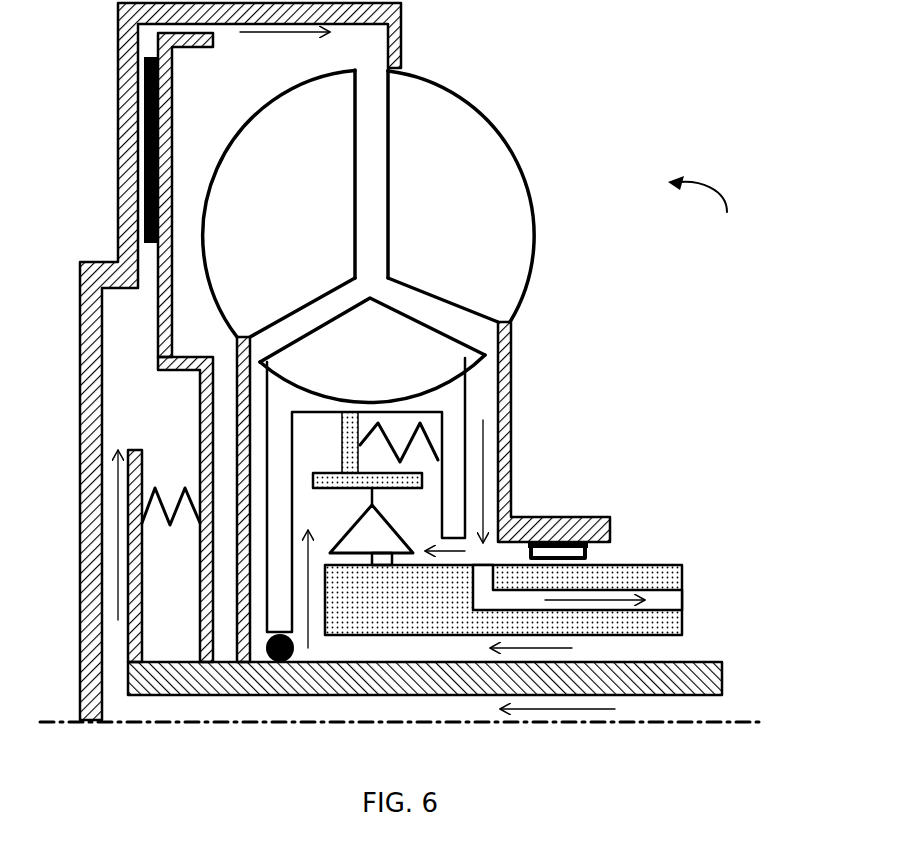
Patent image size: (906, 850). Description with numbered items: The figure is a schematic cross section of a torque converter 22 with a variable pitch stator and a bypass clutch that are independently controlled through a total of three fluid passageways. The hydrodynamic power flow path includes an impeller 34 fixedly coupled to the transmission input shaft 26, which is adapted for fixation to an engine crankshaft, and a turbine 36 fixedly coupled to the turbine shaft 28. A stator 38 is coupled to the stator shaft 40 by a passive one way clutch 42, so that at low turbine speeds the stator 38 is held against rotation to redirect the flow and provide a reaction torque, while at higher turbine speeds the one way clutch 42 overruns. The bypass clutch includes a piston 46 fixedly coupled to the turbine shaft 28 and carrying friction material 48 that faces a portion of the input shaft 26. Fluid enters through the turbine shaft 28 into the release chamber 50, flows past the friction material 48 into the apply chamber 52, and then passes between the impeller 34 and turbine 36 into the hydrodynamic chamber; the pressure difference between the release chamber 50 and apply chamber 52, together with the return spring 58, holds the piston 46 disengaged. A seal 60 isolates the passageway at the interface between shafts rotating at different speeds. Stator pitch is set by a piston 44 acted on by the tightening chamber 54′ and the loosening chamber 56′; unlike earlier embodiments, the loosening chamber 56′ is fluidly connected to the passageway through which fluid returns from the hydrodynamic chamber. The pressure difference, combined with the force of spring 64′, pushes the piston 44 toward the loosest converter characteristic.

The torque converter 22 is at (702, 214).
The transmission input shaft 26 is at (118, 110).
The turbine shaft 28 is at (690, 662).
The impeller 34 is at (447, 224).
The turbine 36 is at (262, 224).
The stator 38 is at (332, 375).
The stator shaft 40 is at (655, 565).
The one way clutch 42 is at (392, 556).
The piston 44 is at (362, 447).
The piston 46 is at (186, 357).
The friction material 48 is at (168, 115).
The release chamber 50 is at (127, 412).
The apply chamber 52 is at (259, 64).
The tightening chamber 54′ is at (334, 527).
The loosening chamber 56′ is at (424, 527).
The return spring 58 is at (160, 490).
The seal 60 is at (280, 662).
The spring 64′ is at (442, 432).